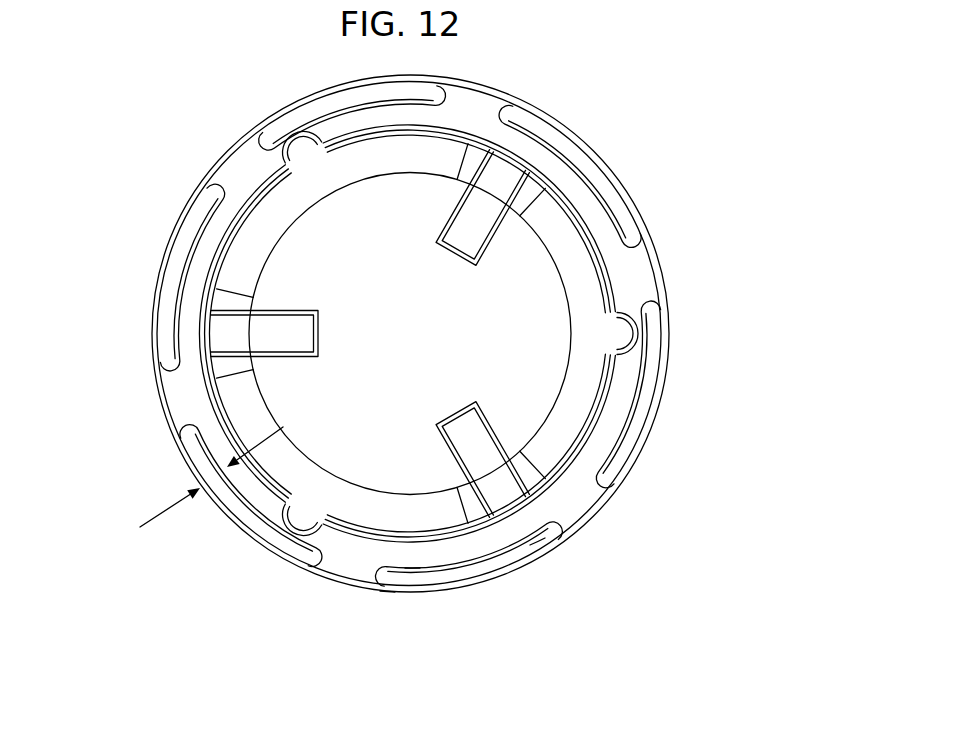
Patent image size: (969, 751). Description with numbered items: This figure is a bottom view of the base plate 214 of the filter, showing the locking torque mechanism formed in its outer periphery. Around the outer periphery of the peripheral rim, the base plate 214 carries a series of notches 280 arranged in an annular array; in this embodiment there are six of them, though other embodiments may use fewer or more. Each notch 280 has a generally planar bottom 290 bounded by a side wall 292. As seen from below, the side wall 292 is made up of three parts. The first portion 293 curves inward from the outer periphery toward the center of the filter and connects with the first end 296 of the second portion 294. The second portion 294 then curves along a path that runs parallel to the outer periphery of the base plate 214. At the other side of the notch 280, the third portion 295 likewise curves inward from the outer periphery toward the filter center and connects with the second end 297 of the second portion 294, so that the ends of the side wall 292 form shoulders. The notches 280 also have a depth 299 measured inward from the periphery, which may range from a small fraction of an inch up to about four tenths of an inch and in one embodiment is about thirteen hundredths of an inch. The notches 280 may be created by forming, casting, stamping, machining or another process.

The base plate 214 is at (681, 233).
The notch 280 is at (333, 103).
The generally planar bottom 290 is at (450, 573).
The side wall 292 is at (520, 532).
The first portion 293 is at (562, 540).
The second portion 294 is at (480, 557).
The third portion 295 is at (387, 590).
The first end 296 is at (538, 540).
The second end 297 is at (412, 567).
The depth 299 is at (188, 486).